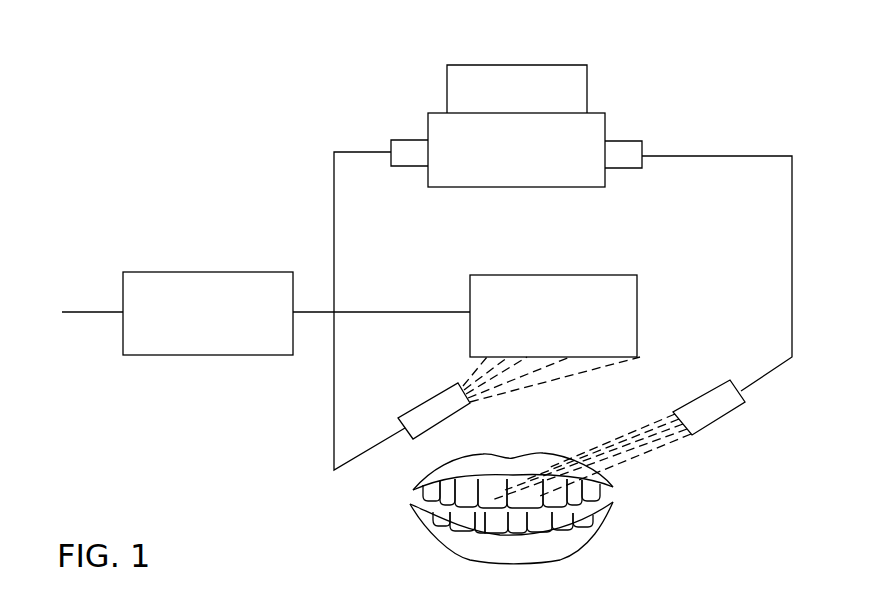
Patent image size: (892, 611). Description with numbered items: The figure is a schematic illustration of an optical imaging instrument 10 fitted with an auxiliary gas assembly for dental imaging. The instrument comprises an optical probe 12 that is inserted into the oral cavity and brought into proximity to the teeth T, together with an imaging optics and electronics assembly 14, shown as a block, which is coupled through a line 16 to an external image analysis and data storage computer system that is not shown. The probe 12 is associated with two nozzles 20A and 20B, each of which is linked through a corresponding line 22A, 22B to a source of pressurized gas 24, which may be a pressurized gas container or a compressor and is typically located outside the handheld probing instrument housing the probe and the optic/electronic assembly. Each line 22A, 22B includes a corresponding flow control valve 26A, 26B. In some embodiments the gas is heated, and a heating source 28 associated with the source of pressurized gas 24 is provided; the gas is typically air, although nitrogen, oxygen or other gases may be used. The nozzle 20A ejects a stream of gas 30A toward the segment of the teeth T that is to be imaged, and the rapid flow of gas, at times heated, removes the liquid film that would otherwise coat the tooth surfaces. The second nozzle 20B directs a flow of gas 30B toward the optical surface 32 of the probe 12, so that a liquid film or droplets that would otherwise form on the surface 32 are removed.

The optical imaging instrument 10 is at (277, 108).
The optical probe 12 is at (572, 287).
The imaging optics and electronics assembly 14 is at (195, 272).
The line 16 is at (93, 310).
The nozzle 20A is at (705, 412).
The second nozzle 20B is at (433, 411).
The line 22A is at (792, 276).
The line 22B is at (334, 228).
The source of pressurized gas 24 is at (585, 142).
The flow control valve 26A is at (628, 157).
The flow control valve 26B is at (410, 152).
The heating source 28 is at (487, 82).
The stream of gas 30A is at (622, 450).
The flow of gas 30B is at (522, 374).
The optical surface 32 is at (551, 357).
The teeth T is at (535, 533).